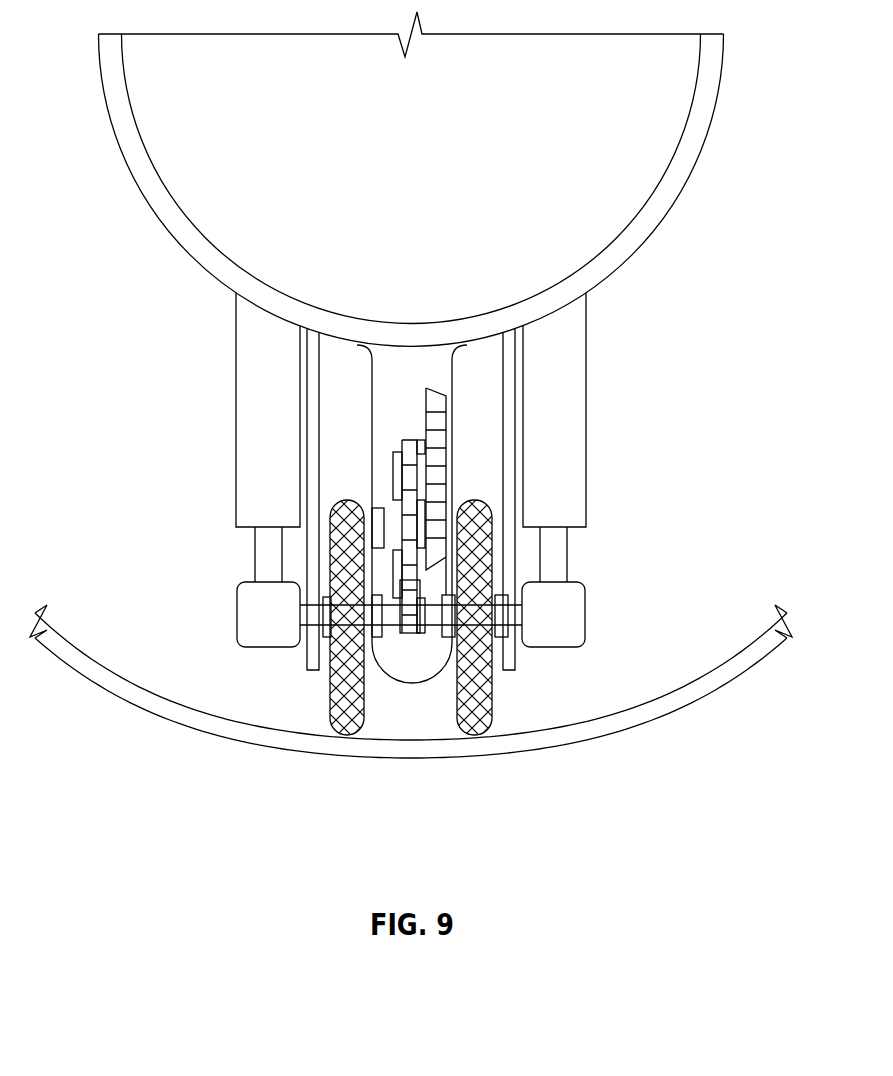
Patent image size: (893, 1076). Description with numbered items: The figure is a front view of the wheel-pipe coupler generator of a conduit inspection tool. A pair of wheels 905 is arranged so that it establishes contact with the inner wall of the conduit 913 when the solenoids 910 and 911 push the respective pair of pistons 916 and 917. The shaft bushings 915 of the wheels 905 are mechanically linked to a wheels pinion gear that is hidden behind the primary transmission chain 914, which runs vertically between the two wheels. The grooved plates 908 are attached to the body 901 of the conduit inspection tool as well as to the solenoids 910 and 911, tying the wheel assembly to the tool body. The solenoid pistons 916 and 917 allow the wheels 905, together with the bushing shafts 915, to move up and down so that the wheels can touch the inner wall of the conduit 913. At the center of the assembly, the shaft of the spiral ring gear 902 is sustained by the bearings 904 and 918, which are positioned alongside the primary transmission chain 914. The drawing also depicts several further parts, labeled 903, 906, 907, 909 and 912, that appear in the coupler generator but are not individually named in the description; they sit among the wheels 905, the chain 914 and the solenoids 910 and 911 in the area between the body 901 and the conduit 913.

The body 901 is at (705, 143).
The spiral ring gear 902 is at (433, 388).
The slider 903 is at (380, 508).
The bearing 904 is at (448, 463).
The wheels 905 is at (338, 730).
The rounded bottom of housing 906 is at (397, 682).
The drive link 907 is at (420, 650).
The grooved plates 908 is at (307, 668).
The right mount block 909 is at (586, 615).
The solenoid 910 is at (586, 388).
The solenoid 911 is at (236, 402).
The left mount block 912 is at (237, 612).
The conduit 913 is at (133, 698).
The primary transmission chain 914 is at (415, 440).
The shaft bushings 915 is at (328, 660).
The solenoid piston 916 is at (567, 556).
The solenoid piston 917 is at (255, 567).
The bearing 918 is at (396, 452).